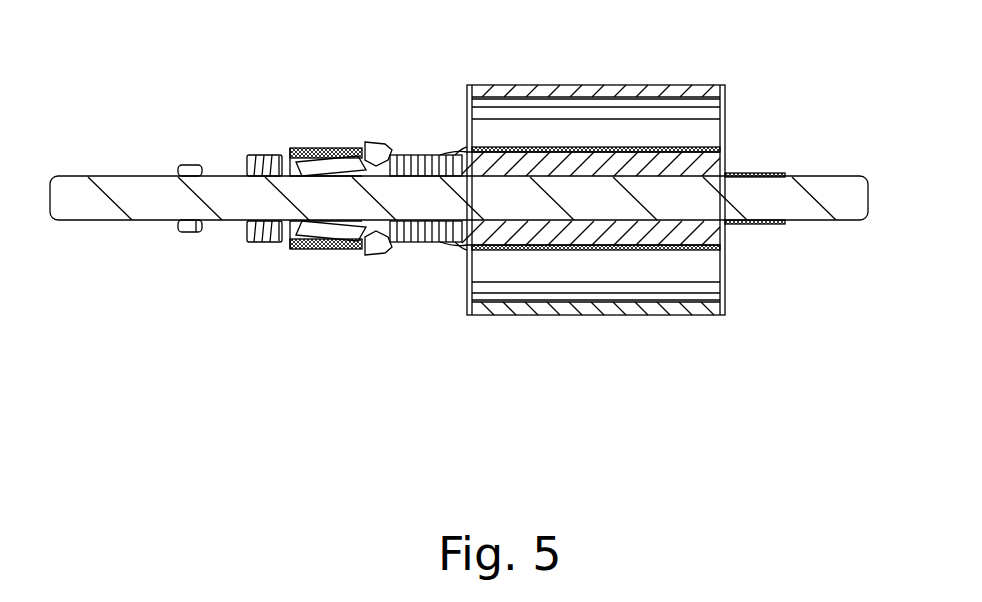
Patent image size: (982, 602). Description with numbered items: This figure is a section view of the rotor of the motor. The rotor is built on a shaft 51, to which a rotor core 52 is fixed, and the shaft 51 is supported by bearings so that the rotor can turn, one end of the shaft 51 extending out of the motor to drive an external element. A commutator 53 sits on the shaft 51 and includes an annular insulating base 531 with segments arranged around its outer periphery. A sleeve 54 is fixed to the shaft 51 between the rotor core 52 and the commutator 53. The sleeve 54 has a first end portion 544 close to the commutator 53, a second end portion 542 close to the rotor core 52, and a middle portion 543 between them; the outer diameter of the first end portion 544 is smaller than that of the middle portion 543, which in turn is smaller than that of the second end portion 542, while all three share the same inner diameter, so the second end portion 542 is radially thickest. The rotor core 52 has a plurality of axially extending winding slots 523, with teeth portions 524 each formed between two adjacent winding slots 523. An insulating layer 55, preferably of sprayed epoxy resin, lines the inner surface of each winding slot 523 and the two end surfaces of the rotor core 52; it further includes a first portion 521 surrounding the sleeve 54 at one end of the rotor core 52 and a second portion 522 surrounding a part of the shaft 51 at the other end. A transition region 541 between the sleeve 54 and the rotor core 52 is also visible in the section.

The shaft 51 is at (800, 240).
The rotor core 52 is at (646, 222).
The first portion 521 is at (425, 155).
The second portion 522 is at (770, 170).
The winding slots 523 is at (576, 270).
The teeth portions 524 is at (640, 312).
The commutator 53 is at (320, 152).
The insulating base 531 is at (340, 150).
The sleeve 54 is at (370, 255).
The transition portion 541 is at (481, 281).
The second end portion 542 is at (443, 242).
The middle portion 543 is at (405, 242).
The first end portion 544 is at (367, 247).
The insulating layer 55 is at (580, 105).